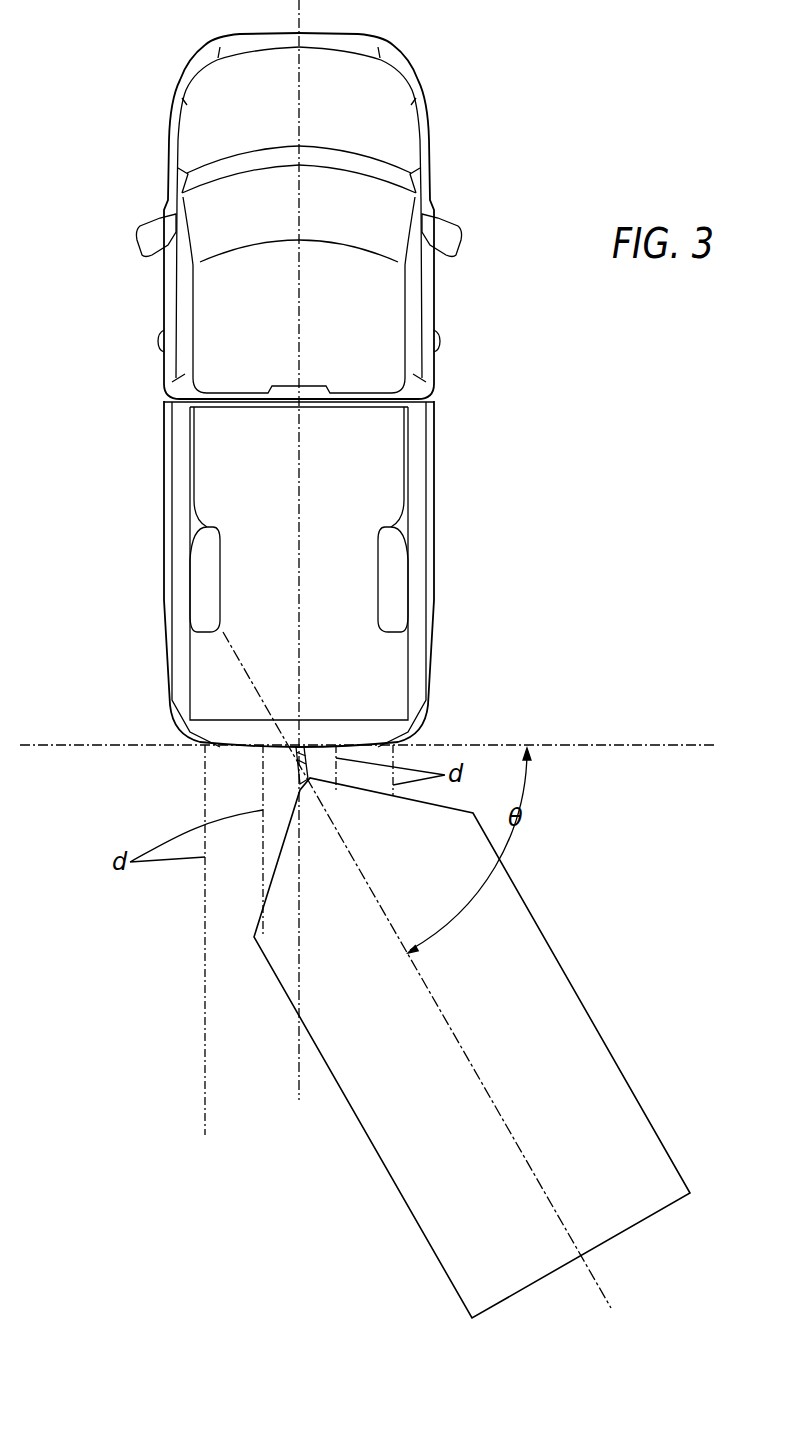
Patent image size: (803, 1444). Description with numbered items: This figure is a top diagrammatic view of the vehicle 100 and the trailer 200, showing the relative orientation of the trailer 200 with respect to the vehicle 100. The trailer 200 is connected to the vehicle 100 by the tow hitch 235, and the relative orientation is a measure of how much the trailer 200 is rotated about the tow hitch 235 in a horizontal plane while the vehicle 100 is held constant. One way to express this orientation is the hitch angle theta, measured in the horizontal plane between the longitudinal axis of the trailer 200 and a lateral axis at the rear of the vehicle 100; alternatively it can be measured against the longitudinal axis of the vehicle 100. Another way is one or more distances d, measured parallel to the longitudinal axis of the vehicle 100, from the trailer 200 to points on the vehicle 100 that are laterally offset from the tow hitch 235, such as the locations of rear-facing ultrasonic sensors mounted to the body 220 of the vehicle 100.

The vehicle 100 is at (427, 47).
The body 220 is at (433, 458).
The tow hitch 235 is at (296, 770).
The trailer 200 is at (568, 982).